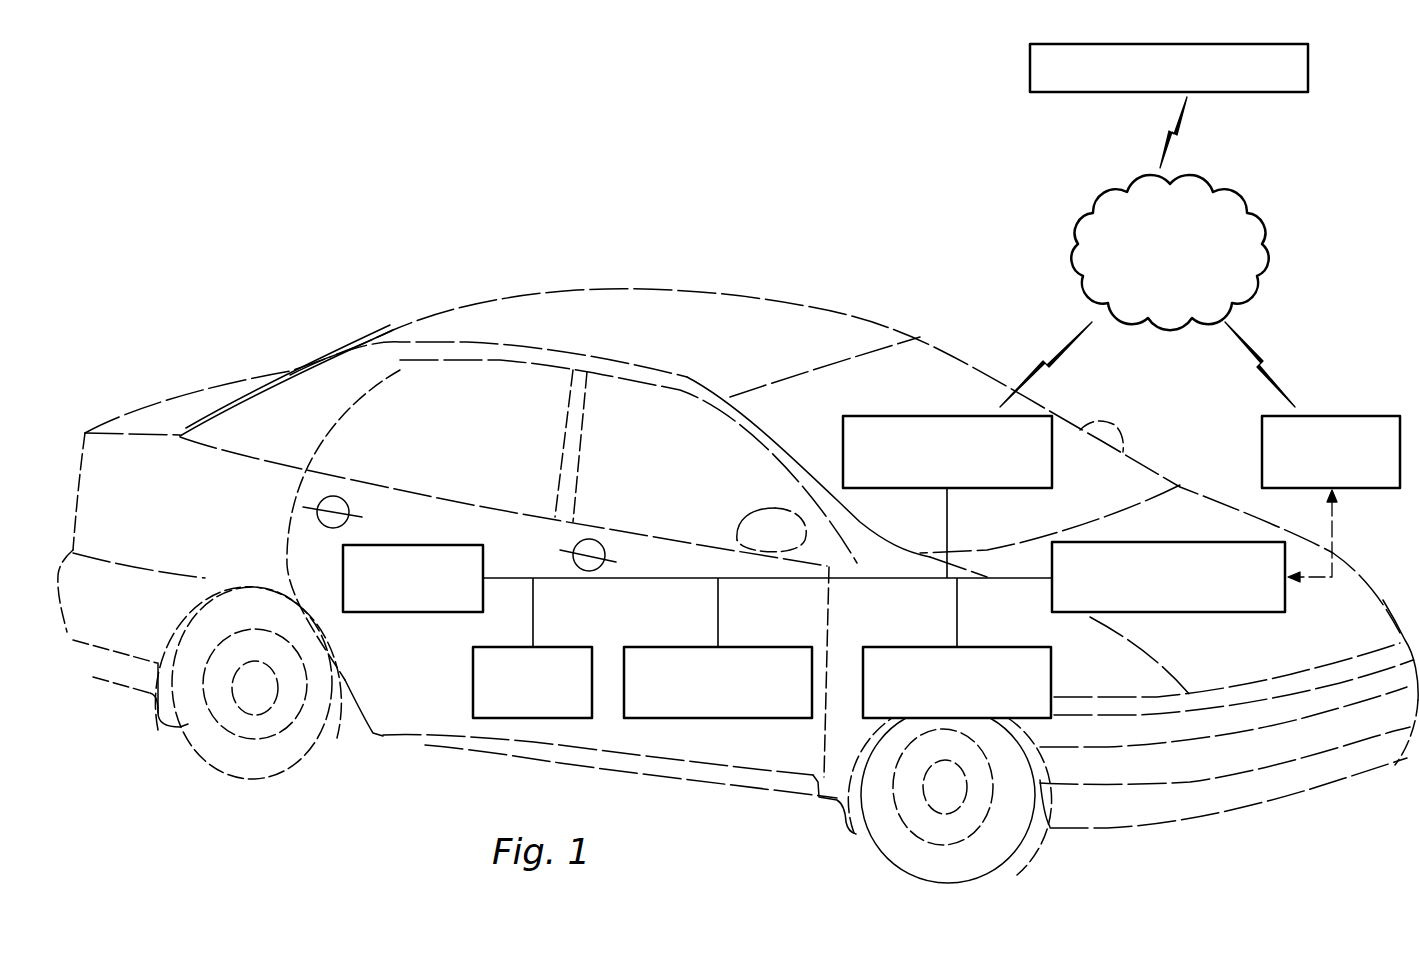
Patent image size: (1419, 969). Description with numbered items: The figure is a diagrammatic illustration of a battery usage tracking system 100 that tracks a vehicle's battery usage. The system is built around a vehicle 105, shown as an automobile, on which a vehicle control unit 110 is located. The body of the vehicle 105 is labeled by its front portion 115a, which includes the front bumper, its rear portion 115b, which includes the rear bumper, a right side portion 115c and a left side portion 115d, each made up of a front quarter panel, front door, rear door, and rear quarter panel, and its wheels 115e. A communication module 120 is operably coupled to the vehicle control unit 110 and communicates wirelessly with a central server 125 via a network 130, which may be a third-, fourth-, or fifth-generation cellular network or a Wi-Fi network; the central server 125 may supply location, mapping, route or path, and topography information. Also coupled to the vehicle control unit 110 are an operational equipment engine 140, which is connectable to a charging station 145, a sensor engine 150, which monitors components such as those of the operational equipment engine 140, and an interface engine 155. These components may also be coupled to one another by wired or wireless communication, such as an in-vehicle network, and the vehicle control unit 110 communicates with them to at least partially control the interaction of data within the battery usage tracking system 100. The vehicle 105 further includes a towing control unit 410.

The battery usage tracking system 100 is at (393, 149).
The vehicle 105 is at (552, 291).
The vehicle control unit 110 is at (683, 645).
The front portion 115a is at (1333, 787).
The rear portion 115b is at (57, 613).
The right side portion 115c is at (455, 738).
The left side portion 115d is at (823, 310).
The wheels 115e is at (233, 780).
The communication module 120 is at (933, 413).
The central server 125 is at (1312, 68).
The network 130 is at (1263, 232).
The operational equipment engine 140 is at (1203, 617).
The charging station 145 is at (1347, 412).
The sensor engine 150 is at (570, 645).
The interface engine 155 is at (410, 617).
The towing control unit 410 is at (1047, 593).